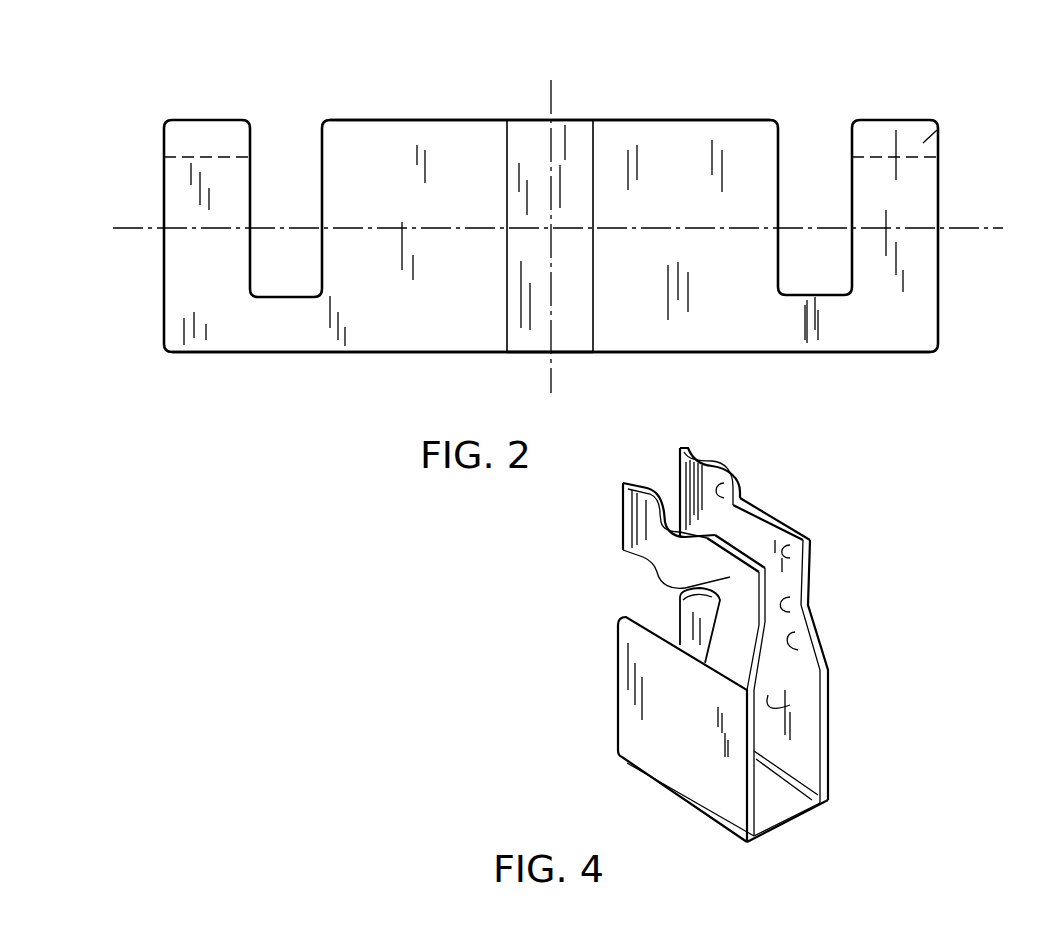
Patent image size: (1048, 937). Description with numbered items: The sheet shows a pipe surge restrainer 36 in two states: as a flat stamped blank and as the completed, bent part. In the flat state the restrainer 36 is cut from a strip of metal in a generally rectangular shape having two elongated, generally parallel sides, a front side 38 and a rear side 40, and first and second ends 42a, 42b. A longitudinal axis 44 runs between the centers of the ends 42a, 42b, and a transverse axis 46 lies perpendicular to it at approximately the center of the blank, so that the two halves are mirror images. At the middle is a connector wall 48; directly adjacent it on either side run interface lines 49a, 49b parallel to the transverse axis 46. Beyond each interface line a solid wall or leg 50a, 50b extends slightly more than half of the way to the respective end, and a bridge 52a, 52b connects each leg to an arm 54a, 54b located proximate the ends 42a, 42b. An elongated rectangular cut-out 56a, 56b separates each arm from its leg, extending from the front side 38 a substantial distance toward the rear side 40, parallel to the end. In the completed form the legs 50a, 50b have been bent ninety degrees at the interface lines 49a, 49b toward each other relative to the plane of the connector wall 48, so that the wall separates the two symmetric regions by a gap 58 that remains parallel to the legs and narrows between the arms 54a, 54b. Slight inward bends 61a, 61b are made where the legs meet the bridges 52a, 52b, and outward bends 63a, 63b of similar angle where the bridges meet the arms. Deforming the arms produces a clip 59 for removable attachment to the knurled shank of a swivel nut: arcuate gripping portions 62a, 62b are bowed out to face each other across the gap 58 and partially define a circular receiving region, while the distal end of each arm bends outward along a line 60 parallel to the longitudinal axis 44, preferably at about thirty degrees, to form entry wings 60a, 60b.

In FIG. 2, the pipe surge restrainer 36 is at (255, 437).
In FIG. 4, the pipe surge restrainer 36 is at (537, 682).
In FIG. 2, the front side 38 is at (338, 118).
In FIG. 2, the rear side 40 is at (403, 355).
In FIG. 2, the first end 42a is at (163, 253).
In FIG. 2, the second end 42b is at (940, 283).
In FIG. 2, the longitudinal axis 44 is at (972, 225).
In FIG. 2, the transverse axis 46 is at (551, 111).
In FIG. 2, the middle connector wall 48 is at (558, 330).
In FIG. 4, the middle connector wall 48 is at (767, 807).
In FIG. 2, the first interface line 49a is at (507, 157).
In FIG. 4, the first interface line 49a is at (688, 810).
In FIG. 2, the second interface line 49b is at (593, 155).
In FIG. 4, the second interface line 49b is at (787, 782).
In FIG. 2, the first leg 50a is at (435, 137).
In FIG. 4, the first leg 50a is at (647, 738).
In FIG. 2, the second leg 50b is at (684, 149).
In FIG. 4, the second leg 50b is at (767, 720).
In FIG. 2, the first bridge 52a is at (268, 322).
In FIG. 4, the first bridge 52a is at (735, 642).
In FIG. 2, the second bridge 52b is at (785, 327).
In FIG. 4, the second bridge 52b is at (787, 633).
In FIG. 2, the first arm 54a is at (222, 172).
In FIG. 4, the first arm 54a is at (730, 577).
In FIG. 2, the second arm 54b is at (880, 130).
In FIG. 4, the second arm 54b is at (780, 543).
In FIG. 2, the first rectangular cut-out 56a is at (268, 167).
In FIG. 2, the second rectangular cut-out 56b is at (811, 176).
In FIG. 4, the gap 58 is at (767, 732).
In FIG. 4, the clip 59 is at (730, 461).
In FIG. 2, the bend line 60 is at (940, 125).
In FIG. 4, the first entry wing 60a is at (637, 510).
In FIG. 4, the second entry wing 60b is at (680, 478).
In FIG. 4, the first inward bend 61a is at (733, 677).
In FIG. 4, the second inward bend 61b is at (833, 673).
In FIG. 4, the first arcuate gripping portion 62a is at (673, 552).
In FIG. 4, the second arcuate gripping portion 62b is at (720, 488).
In FIG. 4, the first outward bend 63a is at (743, 608).
In FIG. 4, the second outward bend 63b is at (777, 600).